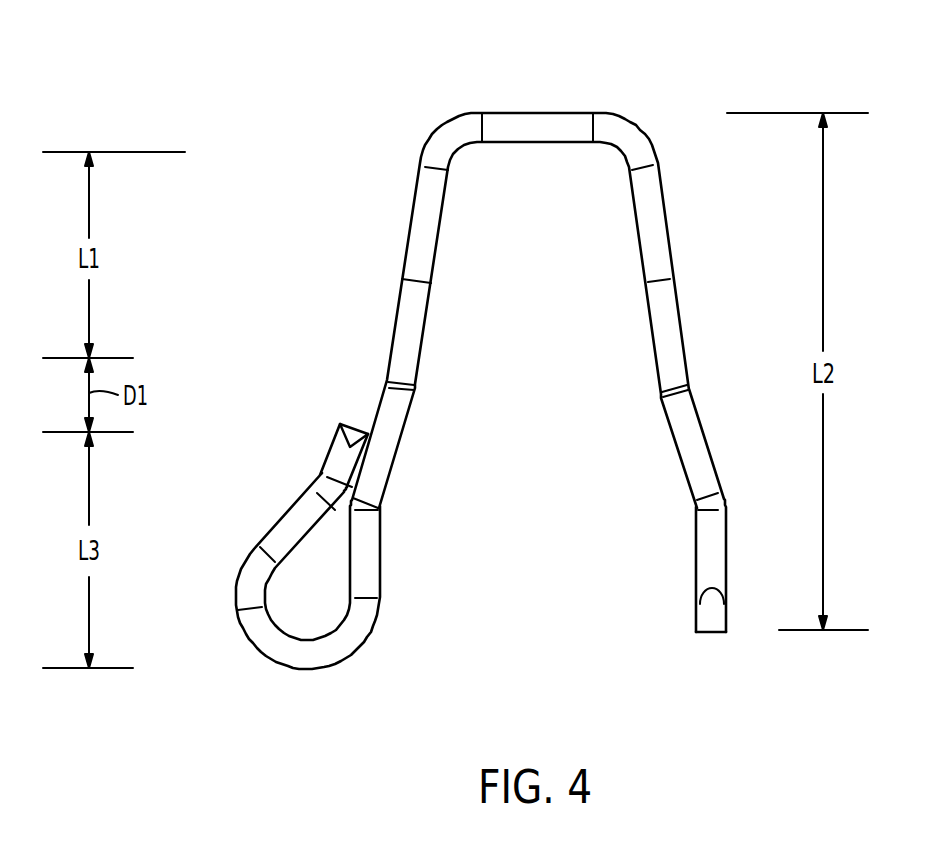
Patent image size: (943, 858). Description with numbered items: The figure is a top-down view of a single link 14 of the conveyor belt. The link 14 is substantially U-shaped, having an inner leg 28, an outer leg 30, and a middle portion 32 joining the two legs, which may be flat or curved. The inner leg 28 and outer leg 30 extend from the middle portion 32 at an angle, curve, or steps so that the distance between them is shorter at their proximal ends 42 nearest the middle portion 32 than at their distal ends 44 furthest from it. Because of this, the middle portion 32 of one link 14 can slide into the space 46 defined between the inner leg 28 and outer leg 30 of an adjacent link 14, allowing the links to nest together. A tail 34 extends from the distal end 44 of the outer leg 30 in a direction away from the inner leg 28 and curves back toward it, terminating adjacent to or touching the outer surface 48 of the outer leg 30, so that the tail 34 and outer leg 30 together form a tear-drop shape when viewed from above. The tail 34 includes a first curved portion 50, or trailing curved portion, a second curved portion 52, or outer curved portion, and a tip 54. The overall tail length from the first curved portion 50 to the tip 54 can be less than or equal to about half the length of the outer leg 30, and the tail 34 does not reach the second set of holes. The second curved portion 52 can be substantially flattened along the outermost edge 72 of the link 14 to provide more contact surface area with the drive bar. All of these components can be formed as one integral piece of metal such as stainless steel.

The link 14 is at (388, 52).
The middle portion 32 is at (547, 100).
The outer leg 30 is at (420, 205).
The inner leg 28 is at (657, 227).
The proximal ends 42 is at (460, 195).
The outer surface 48 is at (390, 358).
The tip 54 is at (352, 423).
The second curved portion 52 is at (227, 582).
The outermost edge 72 is at (232, 607).
The distal ends 44 is at (390, 567).
The space 46 is at (573, 490).
The tail 34 is at (243, 652).
The first curved portion 50 is at (372, 642).